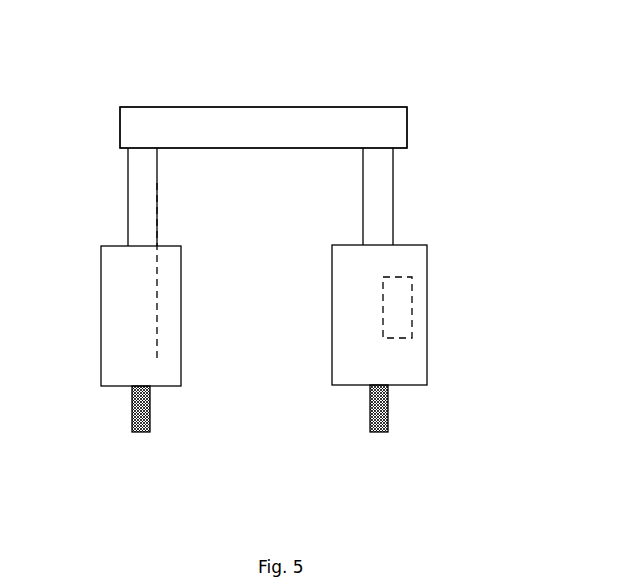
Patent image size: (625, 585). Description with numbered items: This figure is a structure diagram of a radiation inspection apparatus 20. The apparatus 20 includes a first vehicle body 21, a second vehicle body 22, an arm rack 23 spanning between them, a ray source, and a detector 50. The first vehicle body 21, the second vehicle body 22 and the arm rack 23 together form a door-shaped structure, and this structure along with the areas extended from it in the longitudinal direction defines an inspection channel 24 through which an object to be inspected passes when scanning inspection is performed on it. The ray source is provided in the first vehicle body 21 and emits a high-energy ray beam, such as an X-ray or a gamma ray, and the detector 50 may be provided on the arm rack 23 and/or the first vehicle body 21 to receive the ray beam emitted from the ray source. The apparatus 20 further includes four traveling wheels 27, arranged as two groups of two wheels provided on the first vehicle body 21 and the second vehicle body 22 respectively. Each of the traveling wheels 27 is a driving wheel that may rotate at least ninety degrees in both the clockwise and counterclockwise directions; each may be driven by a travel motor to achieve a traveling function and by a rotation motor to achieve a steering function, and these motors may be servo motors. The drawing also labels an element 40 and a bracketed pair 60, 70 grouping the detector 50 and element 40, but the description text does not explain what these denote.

The radiation inspection apparatus 20 is at (268, 92).
The first vehicle body 21 is at (108, 328).
The second vehicle body 22 is at (417, 318).
The arm rack 23 is at (168, 115).
The inspection channel 24 is at (273, 279).
The traveling wheels 27 is at (131, 412).
The detection sensor 40 is at (402, 286).
The detector 50 is at (158, 263).
The detection unit 60 is at (370, 266).
The detection unit 70 is at (497, 176).